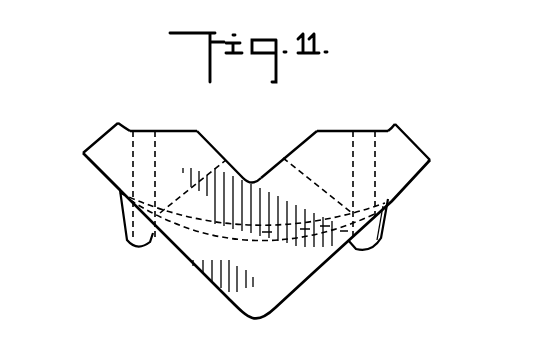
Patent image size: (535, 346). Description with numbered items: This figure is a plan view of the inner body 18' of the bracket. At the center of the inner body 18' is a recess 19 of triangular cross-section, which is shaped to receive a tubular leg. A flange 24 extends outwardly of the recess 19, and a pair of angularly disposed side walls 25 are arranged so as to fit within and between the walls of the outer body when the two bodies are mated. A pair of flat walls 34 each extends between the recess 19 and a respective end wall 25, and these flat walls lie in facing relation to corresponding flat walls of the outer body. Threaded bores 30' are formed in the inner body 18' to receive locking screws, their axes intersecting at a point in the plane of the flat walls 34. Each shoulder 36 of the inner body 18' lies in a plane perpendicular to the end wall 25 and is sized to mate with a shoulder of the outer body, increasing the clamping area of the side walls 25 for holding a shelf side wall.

The inner body 18' is at (461, 153).
The recess 19 is at (307, 155).
The flange 24 is at (313, 265).
The side walls 25 is at (97, 138).
The threaded bores 30' is at (234, 157).
The flat walls 34 is at (163, 130).
The shoulder 36 is at (127, 122).